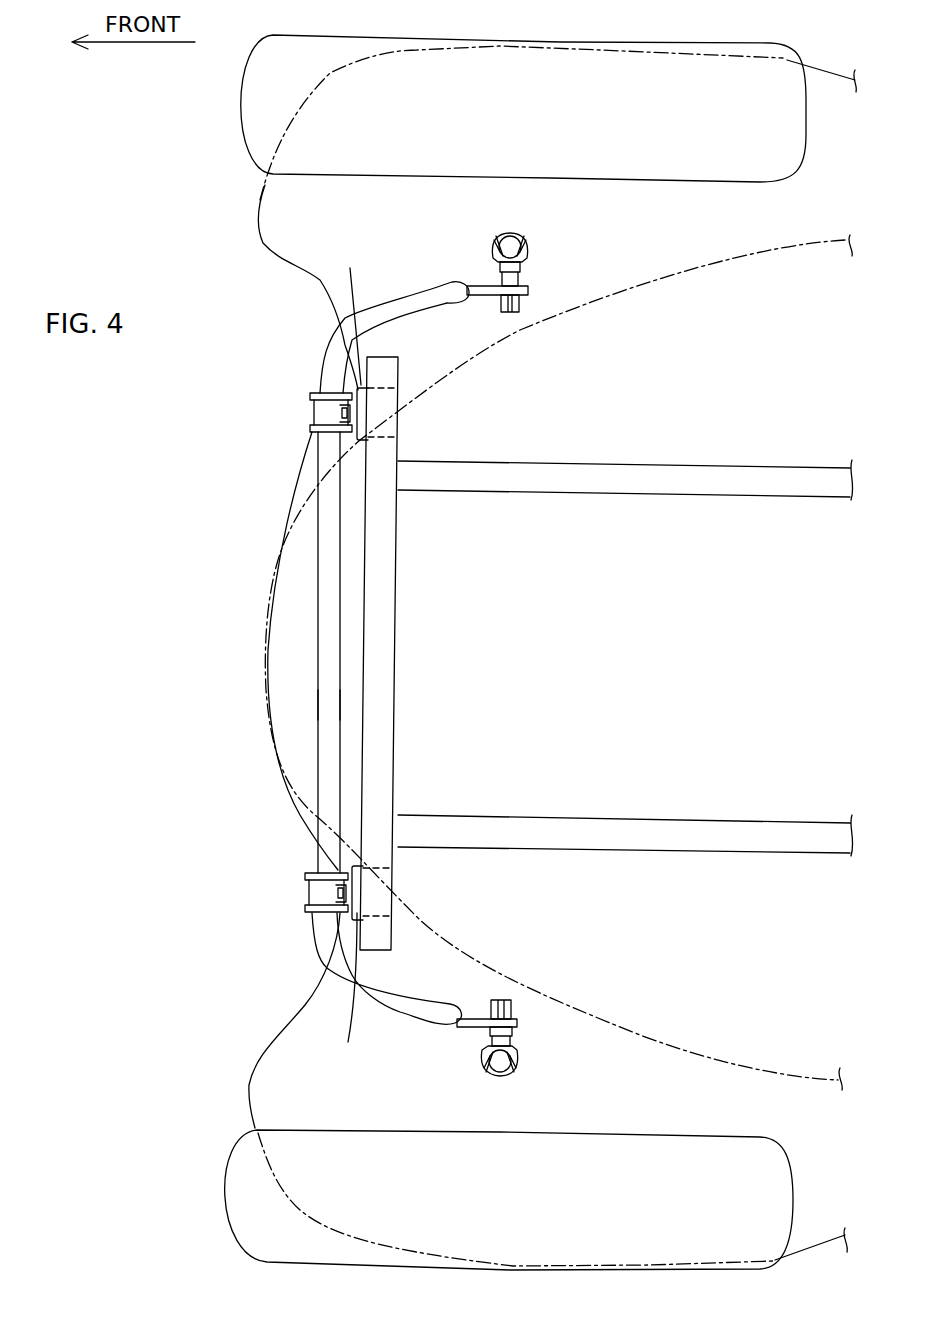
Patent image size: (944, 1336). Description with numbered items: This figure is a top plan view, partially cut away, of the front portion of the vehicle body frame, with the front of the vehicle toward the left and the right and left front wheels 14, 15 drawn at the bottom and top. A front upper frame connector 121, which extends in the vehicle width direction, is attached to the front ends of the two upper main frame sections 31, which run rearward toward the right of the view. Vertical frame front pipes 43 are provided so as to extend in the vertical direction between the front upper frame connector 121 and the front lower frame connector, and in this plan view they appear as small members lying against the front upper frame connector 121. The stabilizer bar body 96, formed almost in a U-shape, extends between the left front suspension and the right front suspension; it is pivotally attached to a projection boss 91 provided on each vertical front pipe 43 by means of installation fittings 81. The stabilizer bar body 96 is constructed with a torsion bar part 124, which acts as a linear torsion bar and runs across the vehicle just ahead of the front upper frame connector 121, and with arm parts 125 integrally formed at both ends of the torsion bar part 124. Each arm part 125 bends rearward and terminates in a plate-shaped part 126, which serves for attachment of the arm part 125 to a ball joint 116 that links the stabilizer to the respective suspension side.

The left front wheel 14 is at (229, 1215).
The right front wheel 15 is at (241, 100).
The upper main frame section 31 is at (686, 462).
The vertical frame front pipe 43 is at (380, 441).
The installation fitting 81 is at (310, 405).
The projection boss 91 is at (343, 658).
The stabilizer bar body 96 is at (299, 669).
The ball joint 116 is at (546, 243).
The front upper frame connector 121 is at (396, 662).
The torsion bar part 124 is at (317, 703).
The arm part 125 is at (398, 302).
The plate-shaped part 126 is at (477, 287).